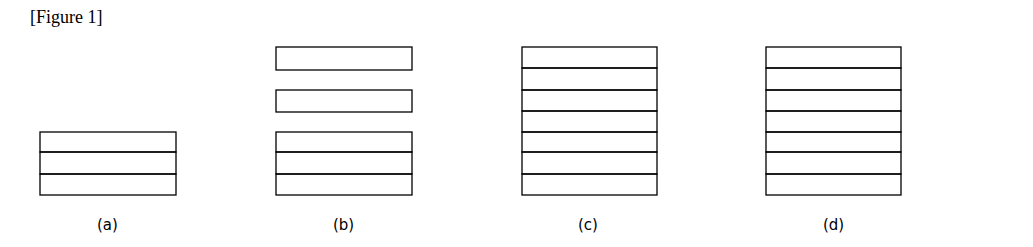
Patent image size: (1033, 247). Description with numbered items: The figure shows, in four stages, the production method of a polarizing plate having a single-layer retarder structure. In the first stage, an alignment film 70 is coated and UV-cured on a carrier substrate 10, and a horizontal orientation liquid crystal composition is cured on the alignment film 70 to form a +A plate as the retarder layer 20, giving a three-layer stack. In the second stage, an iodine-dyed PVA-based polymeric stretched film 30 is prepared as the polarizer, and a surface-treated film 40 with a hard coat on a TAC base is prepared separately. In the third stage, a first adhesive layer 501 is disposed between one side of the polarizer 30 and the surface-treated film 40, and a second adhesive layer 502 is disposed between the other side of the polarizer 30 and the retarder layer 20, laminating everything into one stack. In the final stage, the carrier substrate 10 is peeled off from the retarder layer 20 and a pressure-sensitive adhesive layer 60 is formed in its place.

The carrier substrate 10 is at (177, 184).
The retarder layer 20 is at (177, 142).
The polymeric stretched film 30 is at (413, 100).
The surface-treated film 40 is at (413, 58).
The pressure-sensitive adhesive layer 60 is at (902, 184).
The alignment film 70 is at (177, 163).
The first adhesive layer 501 is at (658, 79).
The second adhesive layer 502 is at (658, 121).